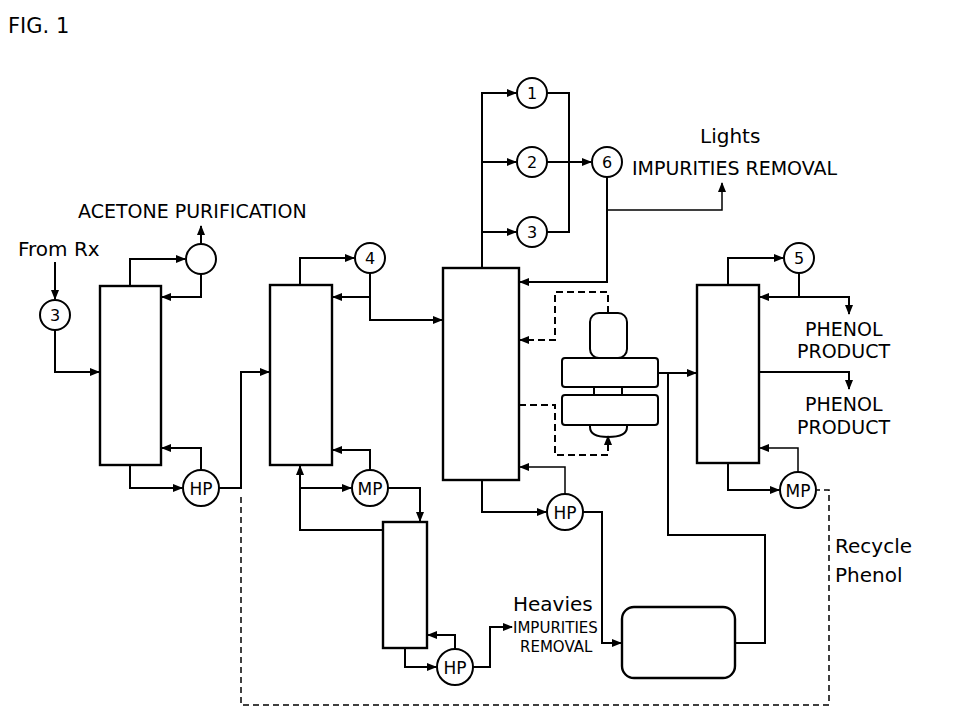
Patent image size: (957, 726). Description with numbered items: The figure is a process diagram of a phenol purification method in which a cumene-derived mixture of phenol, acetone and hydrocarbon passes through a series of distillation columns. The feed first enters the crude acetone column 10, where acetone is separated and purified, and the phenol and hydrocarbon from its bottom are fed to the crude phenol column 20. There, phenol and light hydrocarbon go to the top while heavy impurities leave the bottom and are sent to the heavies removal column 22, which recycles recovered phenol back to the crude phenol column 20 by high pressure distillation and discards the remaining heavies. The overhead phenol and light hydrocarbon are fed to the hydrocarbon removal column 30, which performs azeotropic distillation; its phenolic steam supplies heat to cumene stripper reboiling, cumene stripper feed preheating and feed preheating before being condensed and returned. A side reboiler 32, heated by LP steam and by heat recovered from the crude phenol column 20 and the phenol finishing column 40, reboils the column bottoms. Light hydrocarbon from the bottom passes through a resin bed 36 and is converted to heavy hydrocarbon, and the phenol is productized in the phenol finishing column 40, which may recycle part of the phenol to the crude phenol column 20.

The crude acetone column 10 is at (110, 408).
The crude phenol column 20 is at (318, 405).
The heavies removal column 22 is at (395, 578).
The hydrocarbon removal column 30 is at (465, 462).
The side reboiler 32 is at (621, 432).
The resin bed 36 is at (716, 663).
The phenol finishing column 40 is at (703, 340).